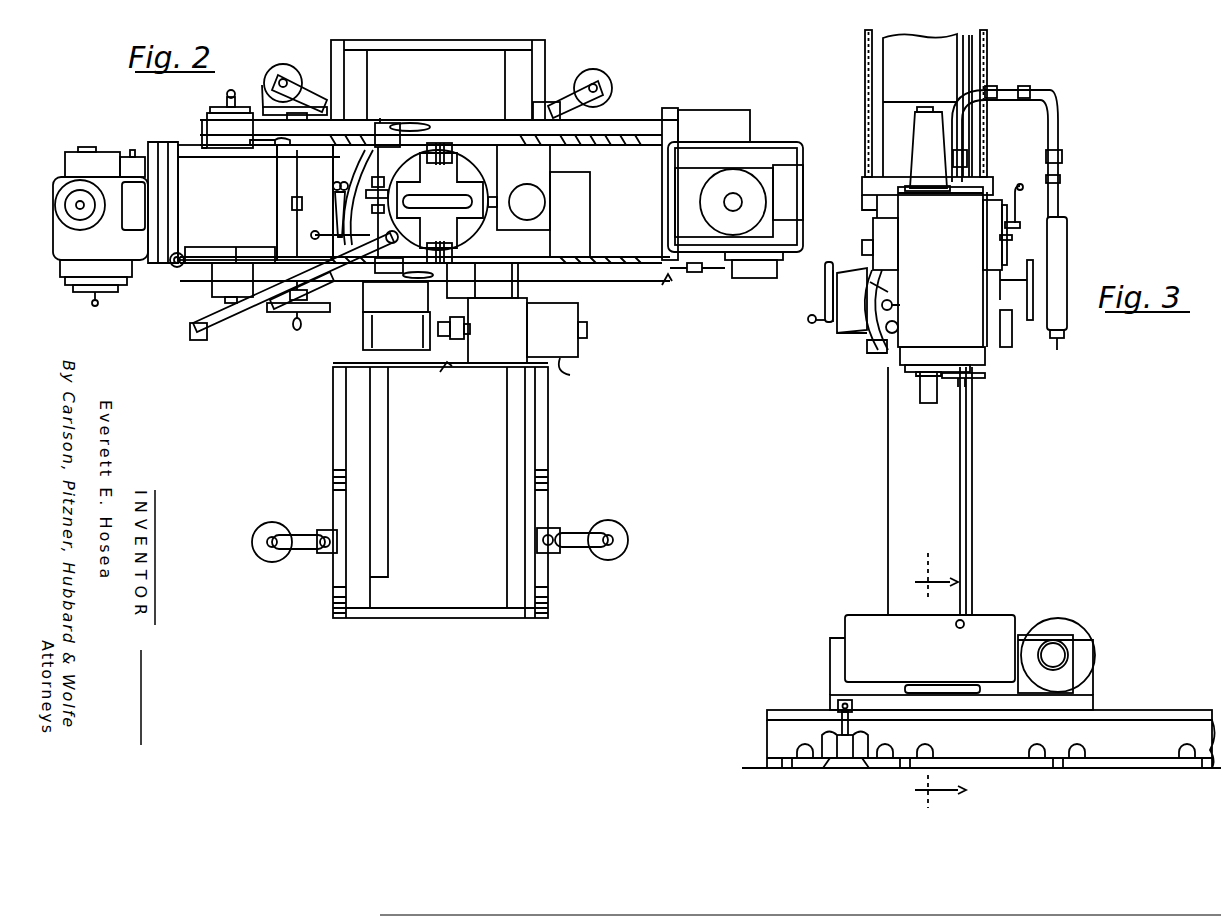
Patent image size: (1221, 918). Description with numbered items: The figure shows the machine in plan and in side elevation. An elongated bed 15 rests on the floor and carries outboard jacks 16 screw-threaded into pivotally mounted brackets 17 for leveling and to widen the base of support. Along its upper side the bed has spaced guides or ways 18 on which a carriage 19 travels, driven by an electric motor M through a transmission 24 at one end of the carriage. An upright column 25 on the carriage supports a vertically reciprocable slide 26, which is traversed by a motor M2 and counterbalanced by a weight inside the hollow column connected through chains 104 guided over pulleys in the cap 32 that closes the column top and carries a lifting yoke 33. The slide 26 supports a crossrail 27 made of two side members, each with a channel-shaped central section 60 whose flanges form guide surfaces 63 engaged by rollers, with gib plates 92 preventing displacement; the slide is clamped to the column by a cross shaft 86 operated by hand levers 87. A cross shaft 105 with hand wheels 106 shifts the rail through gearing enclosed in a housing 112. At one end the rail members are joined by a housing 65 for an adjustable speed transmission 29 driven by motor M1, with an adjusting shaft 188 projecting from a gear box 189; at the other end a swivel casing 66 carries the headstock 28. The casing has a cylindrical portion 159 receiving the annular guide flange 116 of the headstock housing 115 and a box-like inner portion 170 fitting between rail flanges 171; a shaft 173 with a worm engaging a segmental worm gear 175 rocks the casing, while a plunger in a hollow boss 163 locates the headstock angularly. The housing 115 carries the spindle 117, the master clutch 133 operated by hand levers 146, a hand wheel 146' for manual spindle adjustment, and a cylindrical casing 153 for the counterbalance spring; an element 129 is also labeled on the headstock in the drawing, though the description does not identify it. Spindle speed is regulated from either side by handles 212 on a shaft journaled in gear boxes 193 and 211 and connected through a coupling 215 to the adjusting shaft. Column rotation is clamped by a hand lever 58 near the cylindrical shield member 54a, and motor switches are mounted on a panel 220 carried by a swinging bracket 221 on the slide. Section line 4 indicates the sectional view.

In FIG. 2, the bed 15 is at (432, 618).
In FIG. 3, the bed 15 is at (770, 740).
In FIG. 2, the jacks 16 is at (275, 70).
In FIG. 3, the jacks 16 is at (852, 720).
In FIG. 2, the brackets 17 is at (575, 530).
In FIG. 3, the brackets 17 is at (830, 745).
In FIG. 2, the guides or ways 18 is at (360, 616).
In FIG. 3, the guides or ways 18 is at (790, 709).
In FIG. 2, the carriage 19 is at (435, 377).
In FIG. 3, the carriage 19 is at (832, 672).
In FIG. 2, the transmission 24 is at (370, 348).
In FIG. 3, the transmission 24 is at (1075, 648).
In FIG. 3, the column 25 is at (972, 492).
In FIG. 2, the slide 26 is at (478, 157).
In FIG. 3, the slide 26 is at (870, 209).
In FIG. 2, the crossrail 27 is at (668, 284).
In FIG. 2, the headstock 28 is at (62, 166).
In FIG. 3, the headstock 28 is at (902, 381).
In FIG. 2, the adjustable speed transmission 29 is at (662, 206).
In FIG. 2, the cap 32 is at (487, 232).
In FIG. 2, the yoke 33 is at (436, 205).
In FIG. 3, the cylindrical shield member 54a is at (850, 626).
In FIG. 3, the hand lever 58 is at (955, 626).
In FIG. 2, the central section 60 is at (617, 118).
In FIG. 2, the guide surfaces 63 is at (603, 147).
In FIG. 2, the housing 65 is at (742, 112).
In FIG. 2, the casing 66 is at (182, 146).
In FIG. 2, the cross shaft 86 is at (362, 170).
In FIG. 2, the hand levers 87 is at (400, 124).
In FIG. 3, the gib plates 92 is at (870, 360).
In FIG. 2, the chains 104 is at (445, 150).
In FIG. 3, the chains 104 is at (866, 70).
In FIG. 2, the cross shaft 105 is at (305, 195).
In FIG. 2, the hand wheels 106 is at (263, 95).
In FIG. 3, the hand wheels 106 is at (1033, 272).
In FIG. 2, the housing 112 is at (506, 298).
In FIG. 3, the housing 115 is at (950, 266).
In FIG. 3, the annular guide flange 116 is at (848, 340).
In FIG. 3, the spindle 117 is at (935, 408).
In FIG. 2, the cone pulley 129 is at (78, 215).
In FIG. 3, the cone pulley 129 is at (918, 110).
In FIG. 2, the master clutch 133 is at (88, 290).
In FIG. 3, the master clutch 133 is at (1007, 189).
In FIG. 3, the hand levers 146 is at (1026, 217).
In FIG. 3, the hand wheel 146' is at (983, 390).
In FIG. 2, the cylindrical casing 153 is at (108, 148).
In FIG. 3, the cylindrical casing 153 is at (873, 232).
In FIG. 2, the cylindrical portion 159 is at (178, 186).
In FIG. 2, the hollow boss 163 is at (132, 157).
In FIG. 3, the hollow boss 163 is at (898, 312).
In FIG. 2, the box-like inner portion 170 is at (250, 138).
In FIG. 2, the flanges 171 is at (237, 247).
In FIG. 2, the shaft 173 is at (172, 268).
In FIG. 2, the segmental worm gear 175 is at (222, 246).
In FIG. 2, the adjusting shaft 188 is at (725, 276).
In FIG. 2, the gear box 189 is at (760, 278).
In FIG. 2, the gear box 193 is at (207, 122).
In FIG. 3, the gear box 193 is at (872, 327).
In FIG. 2, the gear box 211 is at (215, 282).
In FIG. 3, the gear box 211 is at (1010, 328).
In FIG. 2, the handles 212 is at (218, 103).
In FIG. 3, the handles 212 is at (812, 325).
In FIG. 2, the coupling 215 is at (695, 274).
In FIG. 2, the panel 220 is at (192, 338).
In FIG. 3, the panel 220 is at (1068, 235).
In FIG. 2, the swinging bracket 221 is at (228, 335).
In FIG. 3, the swinging bracket 221 is at (1058, 94).
In FIG. 3, the section line 4 is at (931, 680).
In FIG. 2, the electric motor M is at (572, 372).
In FIG. 3, the electric motor M is at (1072, 628).
In FIG. 2, the driving motor M1 is at (718, 180).
In FIG. 2, the motor M2 is at (530, 187).